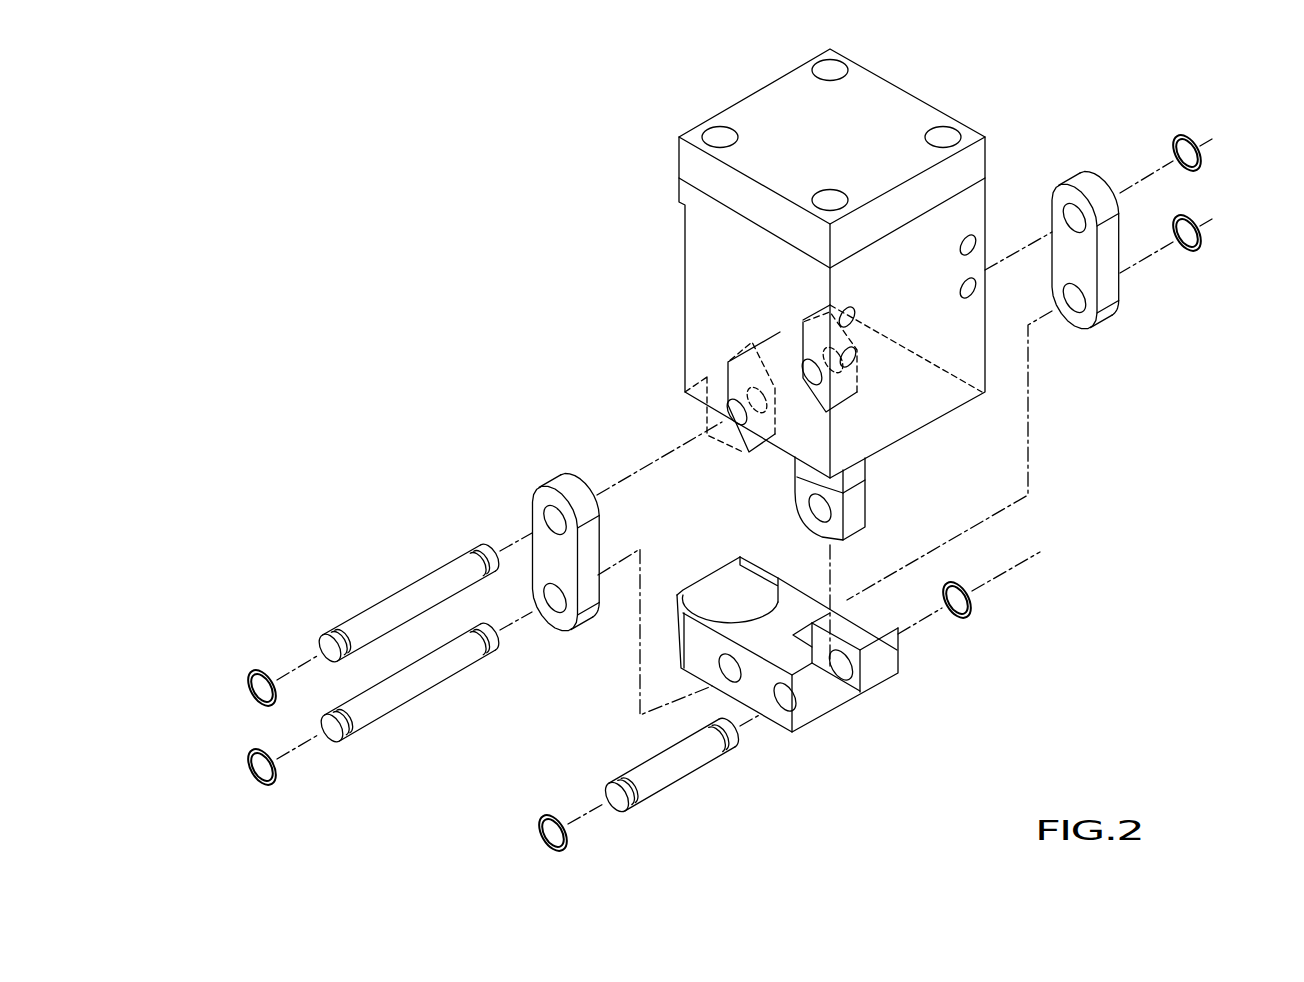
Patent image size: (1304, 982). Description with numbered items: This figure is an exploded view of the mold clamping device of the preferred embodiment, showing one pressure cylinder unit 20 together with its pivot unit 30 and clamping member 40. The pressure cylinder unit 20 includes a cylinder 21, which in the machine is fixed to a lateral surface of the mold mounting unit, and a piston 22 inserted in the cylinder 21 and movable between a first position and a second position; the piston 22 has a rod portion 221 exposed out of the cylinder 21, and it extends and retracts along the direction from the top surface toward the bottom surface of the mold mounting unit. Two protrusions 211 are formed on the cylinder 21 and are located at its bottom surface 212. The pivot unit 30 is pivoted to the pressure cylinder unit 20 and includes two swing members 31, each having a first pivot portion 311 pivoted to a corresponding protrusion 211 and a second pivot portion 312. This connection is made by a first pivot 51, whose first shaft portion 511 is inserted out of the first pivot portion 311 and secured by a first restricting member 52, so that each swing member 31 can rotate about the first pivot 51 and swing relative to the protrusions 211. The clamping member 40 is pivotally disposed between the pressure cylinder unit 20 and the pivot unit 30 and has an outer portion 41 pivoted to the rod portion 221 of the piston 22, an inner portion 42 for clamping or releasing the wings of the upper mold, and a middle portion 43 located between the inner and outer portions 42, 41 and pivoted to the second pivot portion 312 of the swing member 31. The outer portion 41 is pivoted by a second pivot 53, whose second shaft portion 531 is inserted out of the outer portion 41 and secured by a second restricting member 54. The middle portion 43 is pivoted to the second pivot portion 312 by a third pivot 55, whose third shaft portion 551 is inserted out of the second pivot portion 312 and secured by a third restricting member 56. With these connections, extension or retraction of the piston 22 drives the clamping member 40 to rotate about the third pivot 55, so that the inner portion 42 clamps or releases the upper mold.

The pressure cylinder unit 20 is at (653, 176).
The cylinder 21 is at (694, 275).
The protrusions 211 is at (778, 333).
The bottom surface 212 is at (783, 442).
The piston 22 is at (874, 490).
The rod portion 221 is at (803, 508).
The pivot unit 30 is at (1120, 330).
The swing member 31 is at (1092, 178).
The first pivot portion 311 is at (556, 504).
The second pivot portion 312 is at (556, 616).
The clamping member 40 is at (882, 695).
The outer portion 41 is at (820, 688).
The inner portion 42 is at (703, 608).
The middle portion 43 is at (708, 654).
The first pivot 51 is at (410, 576).
The first shaft portion 511 is at (486, 545).
The first restricting member 52 is at (1196, 149).
The second pivot 53 is at (398, 716).
The second shaft portion 531 is at (338, 748).
The second restricting member 54 is at (1196, 229).
The third pivot 55 is at (636, 758).
The third shaft portion 551 is at (610, 781).
The third restricting member 56 is at (545, 821).